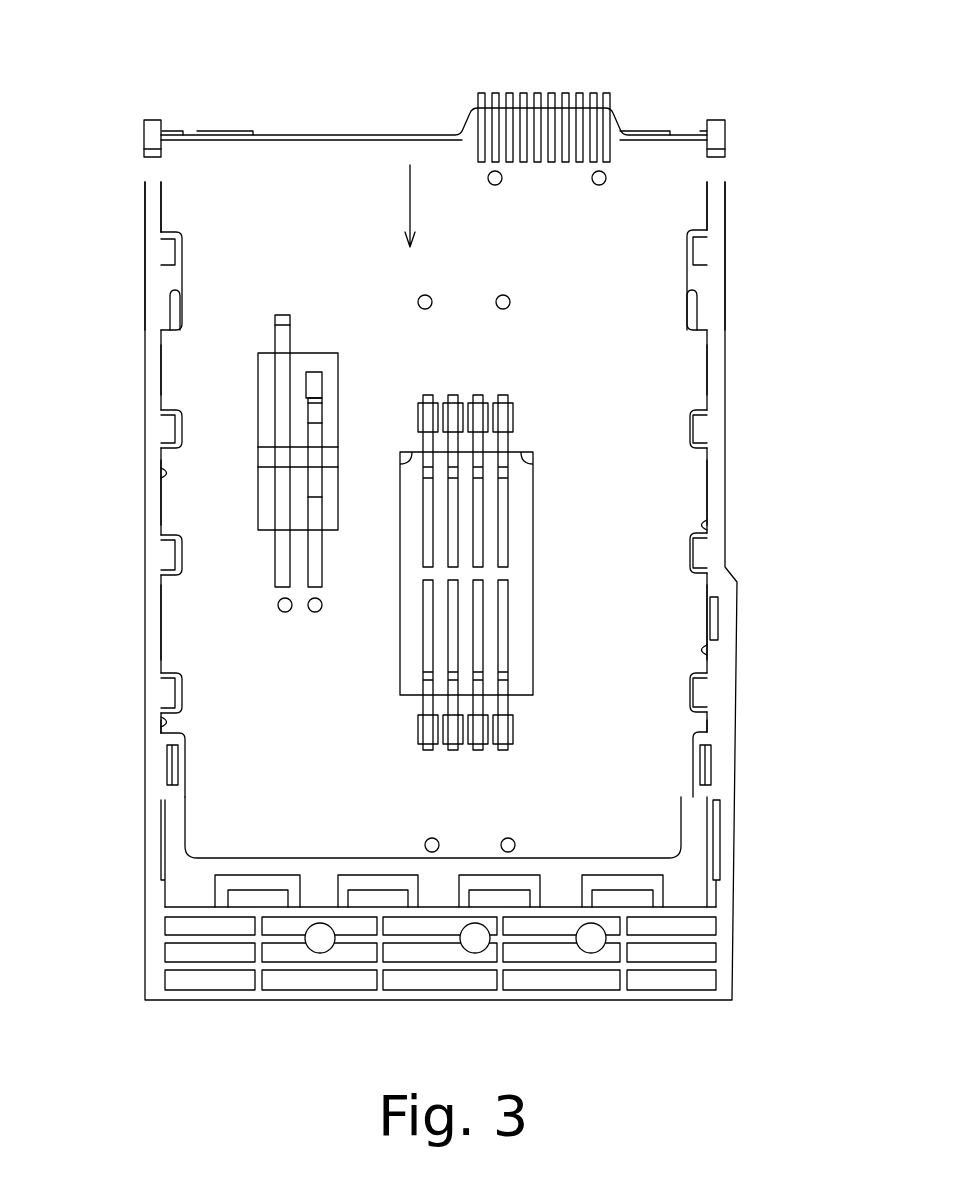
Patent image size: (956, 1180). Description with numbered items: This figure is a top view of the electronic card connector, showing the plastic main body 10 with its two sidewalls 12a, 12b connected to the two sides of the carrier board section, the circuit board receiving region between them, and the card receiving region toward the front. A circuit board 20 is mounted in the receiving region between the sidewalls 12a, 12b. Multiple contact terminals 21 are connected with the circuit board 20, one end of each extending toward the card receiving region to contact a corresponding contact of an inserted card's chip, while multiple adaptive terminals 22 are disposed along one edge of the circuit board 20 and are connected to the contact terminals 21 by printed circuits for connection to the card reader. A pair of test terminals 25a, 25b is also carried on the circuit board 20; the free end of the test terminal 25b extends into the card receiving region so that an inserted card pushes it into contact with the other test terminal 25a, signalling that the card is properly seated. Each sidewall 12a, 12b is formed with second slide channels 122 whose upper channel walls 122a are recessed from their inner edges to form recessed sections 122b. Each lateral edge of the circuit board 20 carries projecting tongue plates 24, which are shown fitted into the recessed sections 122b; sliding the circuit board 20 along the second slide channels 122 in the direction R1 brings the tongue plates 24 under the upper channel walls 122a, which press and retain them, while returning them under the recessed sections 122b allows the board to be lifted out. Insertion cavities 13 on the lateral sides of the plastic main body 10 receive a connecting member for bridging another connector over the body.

The plastic main body 10 is at (255, 1003).
The sidewall 12a is at (718, 213).
The sidewall 12b is at (147, 205).
The insertion cavity 13 is at (155, 162).
The circuit board 20 is at (311, 145).
The contact terminal 21 is at (430, 535).
The adaptive terminal 22 is at (480, 92).
The tongue plate 24 is at (170, 360).
The test terminal 25a is at (278, 385).
The test terminal 25b is at (316, 378).
The second slide channel 122 is at (165, 672).
The upper channel wall 122a is at (170, 242).
The recessed section 122b is at (172, 288).
The direction R1 is at (410, 207).